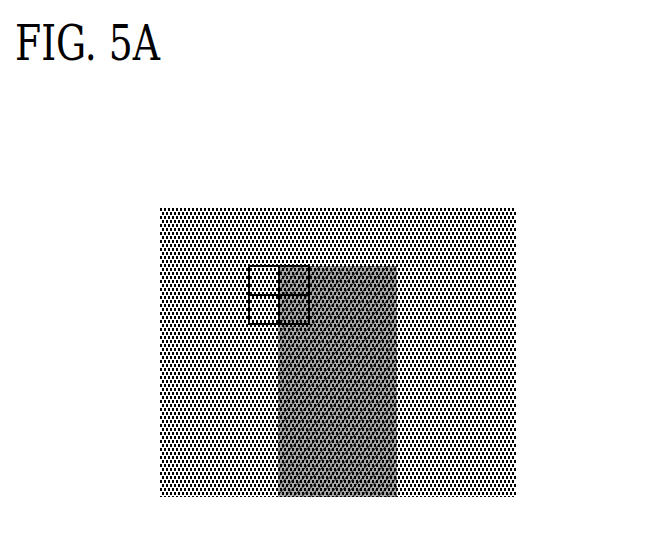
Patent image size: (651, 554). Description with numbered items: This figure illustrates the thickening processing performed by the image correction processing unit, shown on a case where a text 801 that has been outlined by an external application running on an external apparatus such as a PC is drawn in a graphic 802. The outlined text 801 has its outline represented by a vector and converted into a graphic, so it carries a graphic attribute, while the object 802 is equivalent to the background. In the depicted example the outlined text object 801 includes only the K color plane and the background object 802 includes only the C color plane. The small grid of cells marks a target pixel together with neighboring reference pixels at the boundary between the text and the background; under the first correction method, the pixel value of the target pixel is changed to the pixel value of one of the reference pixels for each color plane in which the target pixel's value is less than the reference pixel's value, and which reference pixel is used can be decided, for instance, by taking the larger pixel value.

The outlined text object 801 is at (343, 475).
The graphic 802 is at (473, 475).